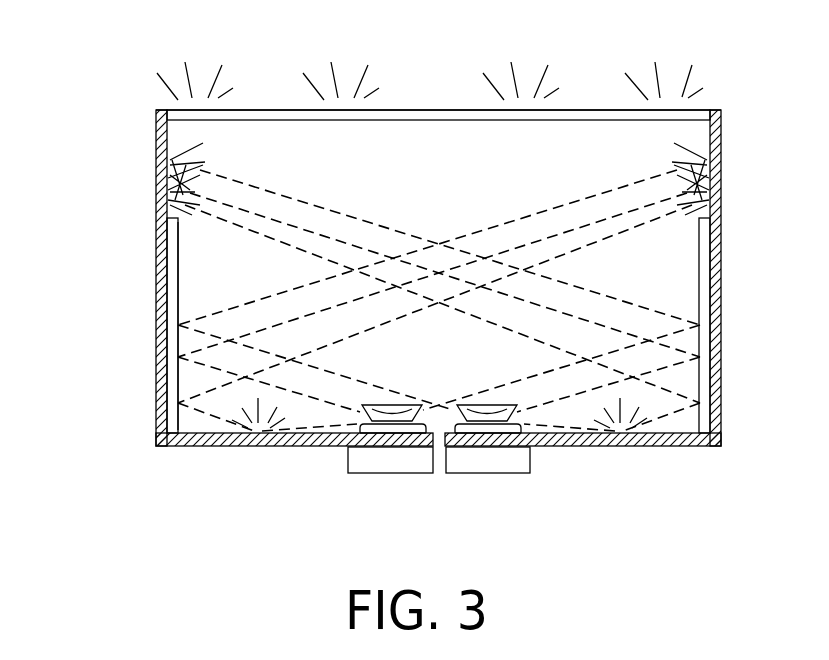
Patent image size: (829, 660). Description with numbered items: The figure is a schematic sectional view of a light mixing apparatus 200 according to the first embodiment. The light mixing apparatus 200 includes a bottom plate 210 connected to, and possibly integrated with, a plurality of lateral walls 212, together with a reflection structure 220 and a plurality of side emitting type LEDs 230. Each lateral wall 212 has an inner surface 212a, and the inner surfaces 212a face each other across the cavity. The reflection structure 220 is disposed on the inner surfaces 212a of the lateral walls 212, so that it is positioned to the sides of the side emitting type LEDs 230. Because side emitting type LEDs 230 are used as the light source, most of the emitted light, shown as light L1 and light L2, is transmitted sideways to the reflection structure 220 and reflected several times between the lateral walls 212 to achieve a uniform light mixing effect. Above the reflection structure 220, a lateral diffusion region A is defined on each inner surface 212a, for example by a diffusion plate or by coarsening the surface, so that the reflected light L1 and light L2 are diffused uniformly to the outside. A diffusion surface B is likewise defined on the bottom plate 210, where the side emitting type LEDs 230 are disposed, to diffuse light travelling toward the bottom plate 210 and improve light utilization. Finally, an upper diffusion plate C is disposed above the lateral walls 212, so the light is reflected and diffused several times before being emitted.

The light mixing apparatus 200 is at (717, 544).
The bottom plate 210 is at (197, 440).
The lateral wall 212 is at (163, 165).
The inner surface 212a is at (170, 288).
The reflection structure 220 is at (167, 320).
The side emitting type LED 230 is at (483, 465).
The lateral diffusion region A is at (170, 147).
The diffusion surface B is at (330, 432).
The upper diffusion plate C is at (583, 117).
The light L1 is at (343, 340).
The light L2 is at (476, 318).